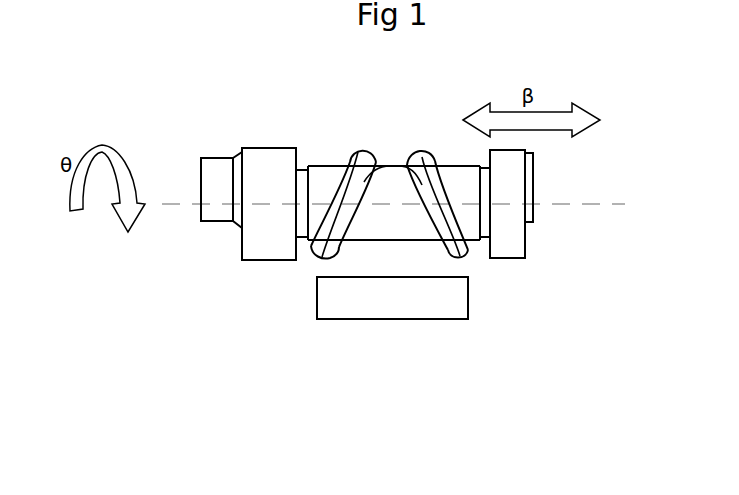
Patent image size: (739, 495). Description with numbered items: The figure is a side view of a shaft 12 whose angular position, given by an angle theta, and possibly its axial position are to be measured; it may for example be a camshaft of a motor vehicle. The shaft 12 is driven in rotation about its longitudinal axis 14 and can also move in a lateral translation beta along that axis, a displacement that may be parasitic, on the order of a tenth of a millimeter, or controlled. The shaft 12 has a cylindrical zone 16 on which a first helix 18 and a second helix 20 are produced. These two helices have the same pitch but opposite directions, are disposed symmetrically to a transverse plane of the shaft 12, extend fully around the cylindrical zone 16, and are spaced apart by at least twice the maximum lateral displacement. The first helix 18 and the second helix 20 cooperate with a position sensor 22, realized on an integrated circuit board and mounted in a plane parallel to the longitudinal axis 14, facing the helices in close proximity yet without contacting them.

The shaft 12 is at (272, 245).
The longitudinal axis 14 is at (592, 204).
The cylindrical zone 16 is at (395, 222).
The first helix 18 is at (360, 156).
The second helix 20 is at (427, 156).
The position sensor 22 is at (448, 307).